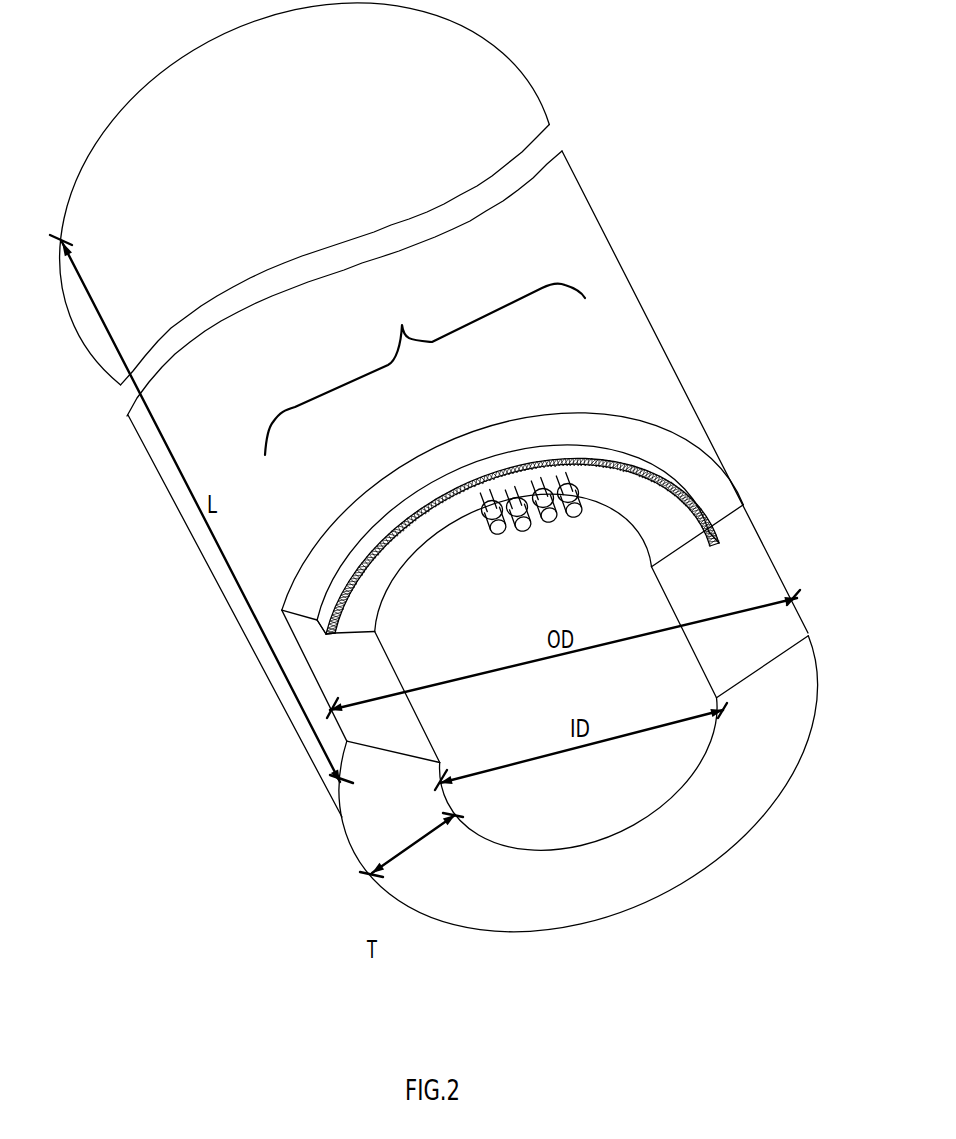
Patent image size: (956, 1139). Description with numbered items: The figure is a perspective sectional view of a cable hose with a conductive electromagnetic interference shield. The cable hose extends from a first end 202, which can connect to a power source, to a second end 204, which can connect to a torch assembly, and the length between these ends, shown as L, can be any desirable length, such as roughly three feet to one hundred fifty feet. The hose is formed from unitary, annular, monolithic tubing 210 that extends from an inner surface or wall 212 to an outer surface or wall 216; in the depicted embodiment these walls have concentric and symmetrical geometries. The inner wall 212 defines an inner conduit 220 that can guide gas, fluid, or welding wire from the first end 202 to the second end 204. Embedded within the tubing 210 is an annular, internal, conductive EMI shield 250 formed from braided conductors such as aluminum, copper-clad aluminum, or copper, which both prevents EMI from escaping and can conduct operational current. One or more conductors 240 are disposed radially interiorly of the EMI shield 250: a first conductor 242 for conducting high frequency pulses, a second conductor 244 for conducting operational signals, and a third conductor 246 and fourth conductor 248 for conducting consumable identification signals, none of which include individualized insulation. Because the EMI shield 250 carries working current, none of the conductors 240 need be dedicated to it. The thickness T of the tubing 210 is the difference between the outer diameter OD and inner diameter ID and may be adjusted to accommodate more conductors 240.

The first end 202 is at (325, 855).
The second end 204 is at (142, 92).
The tubing 210 is at (667, 390).
The inner surface or wall 212 is at (468, 822).
The outer surface or wall 216 is at (342, 813).
The inner conduit 220 is at (563, 815).
The conductors 240 is at (425, 369).
The first conductor 242 is at (470, 492).
The second conductor 244 is at (495, 482).
The third conductor 246 is at (527, 473).
The fourth conductor 248 is at (557, 463).
The EMI shield 250 is at (698, 517).